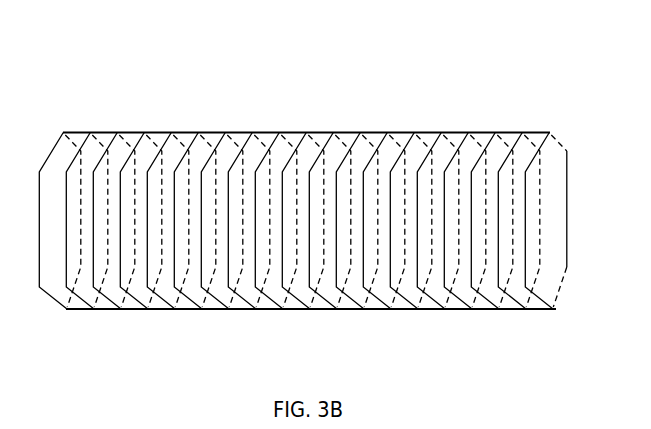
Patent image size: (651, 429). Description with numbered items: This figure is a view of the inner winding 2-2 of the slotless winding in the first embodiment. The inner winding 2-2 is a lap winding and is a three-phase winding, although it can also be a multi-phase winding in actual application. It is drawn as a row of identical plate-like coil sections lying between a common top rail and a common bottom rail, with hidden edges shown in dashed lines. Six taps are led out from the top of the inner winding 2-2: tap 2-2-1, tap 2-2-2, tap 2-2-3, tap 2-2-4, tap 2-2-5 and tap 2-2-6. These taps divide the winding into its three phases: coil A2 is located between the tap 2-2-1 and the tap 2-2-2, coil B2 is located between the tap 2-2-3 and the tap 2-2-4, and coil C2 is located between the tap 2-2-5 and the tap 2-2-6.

The inner winding 2-2 is at (298, 254).
The tap 2-2-1 is at (62, 132).
The tap 2-2-2 is at (223, 132).
The tap 2-2-3 is at (223, 80).
The tap 2-2-4 is at (386, 132).
The tap 2-2-5 is at (386, 80).
The tap 2-2-6 is at (549, 132).